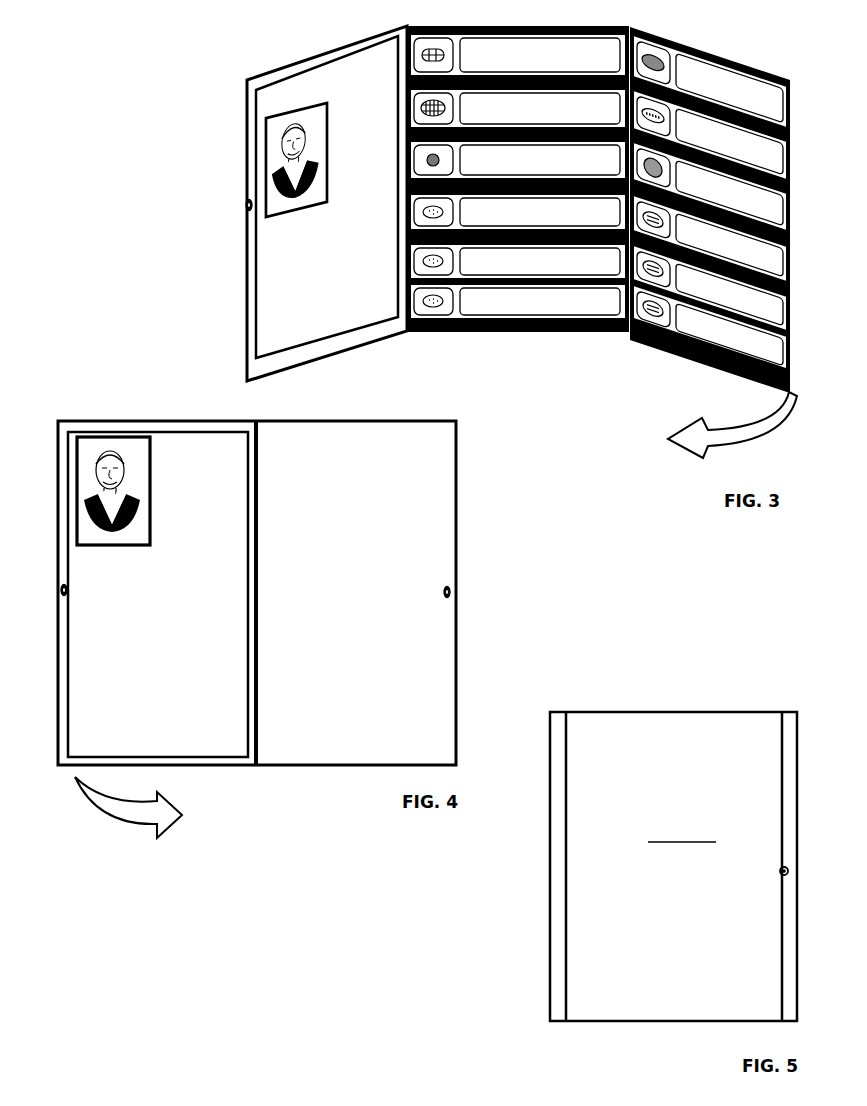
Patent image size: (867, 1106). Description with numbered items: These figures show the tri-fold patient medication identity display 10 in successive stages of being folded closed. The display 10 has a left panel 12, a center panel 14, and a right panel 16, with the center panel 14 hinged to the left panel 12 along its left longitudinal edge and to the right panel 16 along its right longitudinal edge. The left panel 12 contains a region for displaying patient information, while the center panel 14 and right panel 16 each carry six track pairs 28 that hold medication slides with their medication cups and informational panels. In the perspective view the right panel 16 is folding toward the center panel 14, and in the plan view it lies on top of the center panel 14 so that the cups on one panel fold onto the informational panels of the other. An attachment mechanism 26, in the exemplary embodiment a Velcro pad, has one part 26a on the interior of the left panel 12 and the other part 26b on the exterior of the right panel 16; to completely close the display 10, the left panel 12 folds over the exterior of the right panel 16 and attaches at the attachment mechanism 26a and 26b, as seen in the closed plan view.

In FIG. 5, the patient medication identity display 10 is at (672, 711).
In FIG. 3, the left panel 12 is at (345, 351).
In FIG. 4, the left panel 12 is at (150, 420).
In FIG. 3, the center panel 14 is at (522, 334).
In FIG. 3, the right panel 16 is at (682, 360).
In FIG. 4, the right panel 16 is at (350, 766).
In FIG. 5, the attachment mechanism 26 is at (790, 876).
In FIG. 3, the attachment mechanism 26a is at (243, 205).
In FIG. 4, the attachment mechanism 26a is at (59, 588).
In FIG. 4, the attachment mechanism 26b is at (459, 592).
In FIG. 3, the track pairs 28 is at (574, 330).